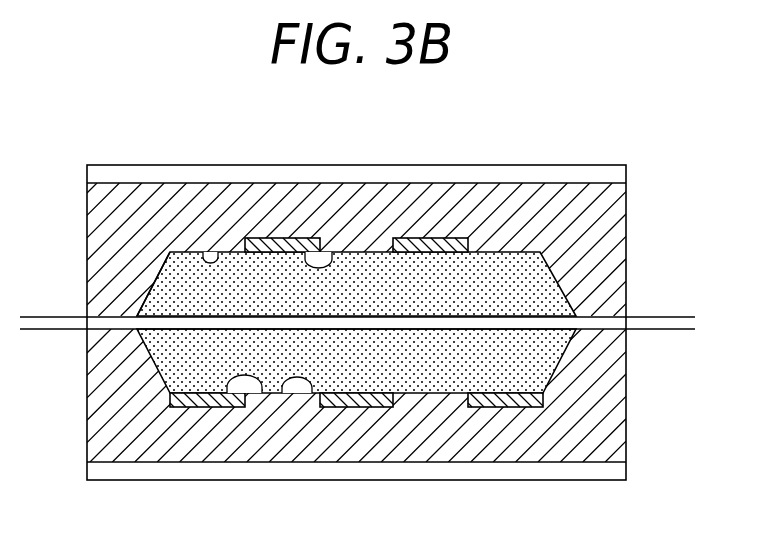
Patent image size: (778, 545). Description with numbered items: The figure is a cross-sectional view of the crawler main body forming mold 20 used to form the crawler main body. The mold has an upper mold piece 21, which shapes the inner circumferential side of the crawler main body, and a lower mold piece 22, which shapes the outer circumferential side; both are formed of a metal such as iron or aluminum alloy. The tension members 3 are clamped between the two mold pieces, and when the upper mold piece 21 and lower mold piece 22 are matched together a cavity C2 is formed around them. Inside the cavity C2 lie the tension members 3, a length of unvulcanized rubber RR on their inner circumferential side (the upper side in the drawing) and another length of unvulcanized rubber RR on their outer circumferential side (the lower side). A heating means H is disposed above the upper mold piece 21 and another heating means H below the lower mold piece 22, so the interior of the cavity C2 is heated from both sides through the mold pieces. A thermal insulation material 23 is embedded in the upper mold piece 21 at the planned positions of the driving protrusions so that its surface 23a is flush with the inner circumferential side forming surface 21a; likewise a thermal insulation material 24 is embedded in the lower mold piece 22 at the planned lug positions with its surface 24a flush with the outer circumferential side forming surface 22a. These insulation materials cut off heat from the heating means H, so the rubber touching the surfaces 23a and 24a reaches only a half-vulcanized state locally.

The crawler main body forming mold 20 is at (543, 139).
The upper mold piece 21 is at (120, 220).
The lower mold piece 22 is at (110, 397).
The crawler main body inner circumferential side forming surface 21a is at (201, 252).
The crawler main body outer circumferential side forming surface 22a is at (312, 393).
The thermal insulation material 23 is at (279, 238).
The surface of the thermal insulation material 23a is at (332, 255).
The thermal insulation material 24 is at (207, 407).
The surface of the thermal insulation material 24a is at (262, 393).
The unvulcanized rubber RR is at (422, 277).
The heating means H is at (487, 175).
The cavity C2 is at (161, 310).
The tension members 3 is at (665, 323).